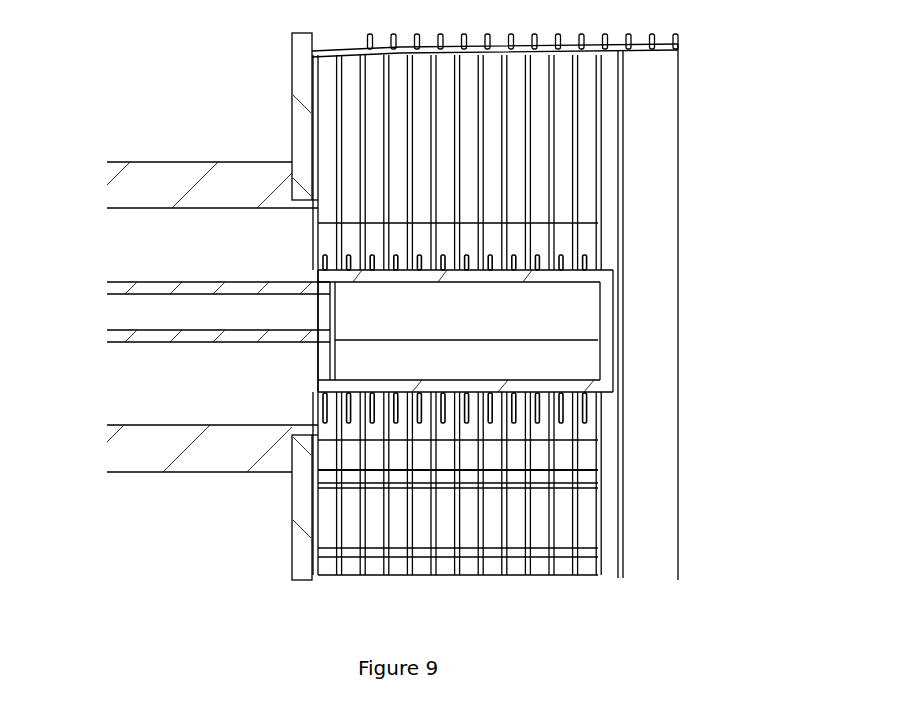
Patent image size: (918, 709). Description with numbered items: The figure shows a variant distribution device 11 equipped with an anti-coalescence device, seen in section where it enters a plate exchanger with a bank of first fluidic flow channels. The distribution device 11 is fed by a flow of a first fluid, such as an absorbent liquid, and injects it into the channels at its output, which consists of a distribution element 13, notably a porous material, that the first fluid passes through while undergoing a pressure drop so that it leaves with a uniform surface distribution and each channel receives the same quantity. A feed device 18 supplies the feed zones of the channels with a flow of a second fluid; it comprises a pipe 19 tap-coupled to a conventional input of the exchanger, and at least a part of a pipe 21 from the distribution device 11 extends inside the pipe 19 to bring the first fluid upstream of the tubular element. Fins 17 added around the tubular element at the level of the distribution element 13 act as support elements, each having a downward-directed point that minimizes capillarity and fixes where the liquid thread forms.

The distribution device 11 is at (530, 340).
The distribution element 13 is at (452, 387).
The fin 17 is at (587, 257).
The feed device 18 is at (182, 219).
The pipe 19 is at (242, 183).
The pipe 21 is at (145, 292).